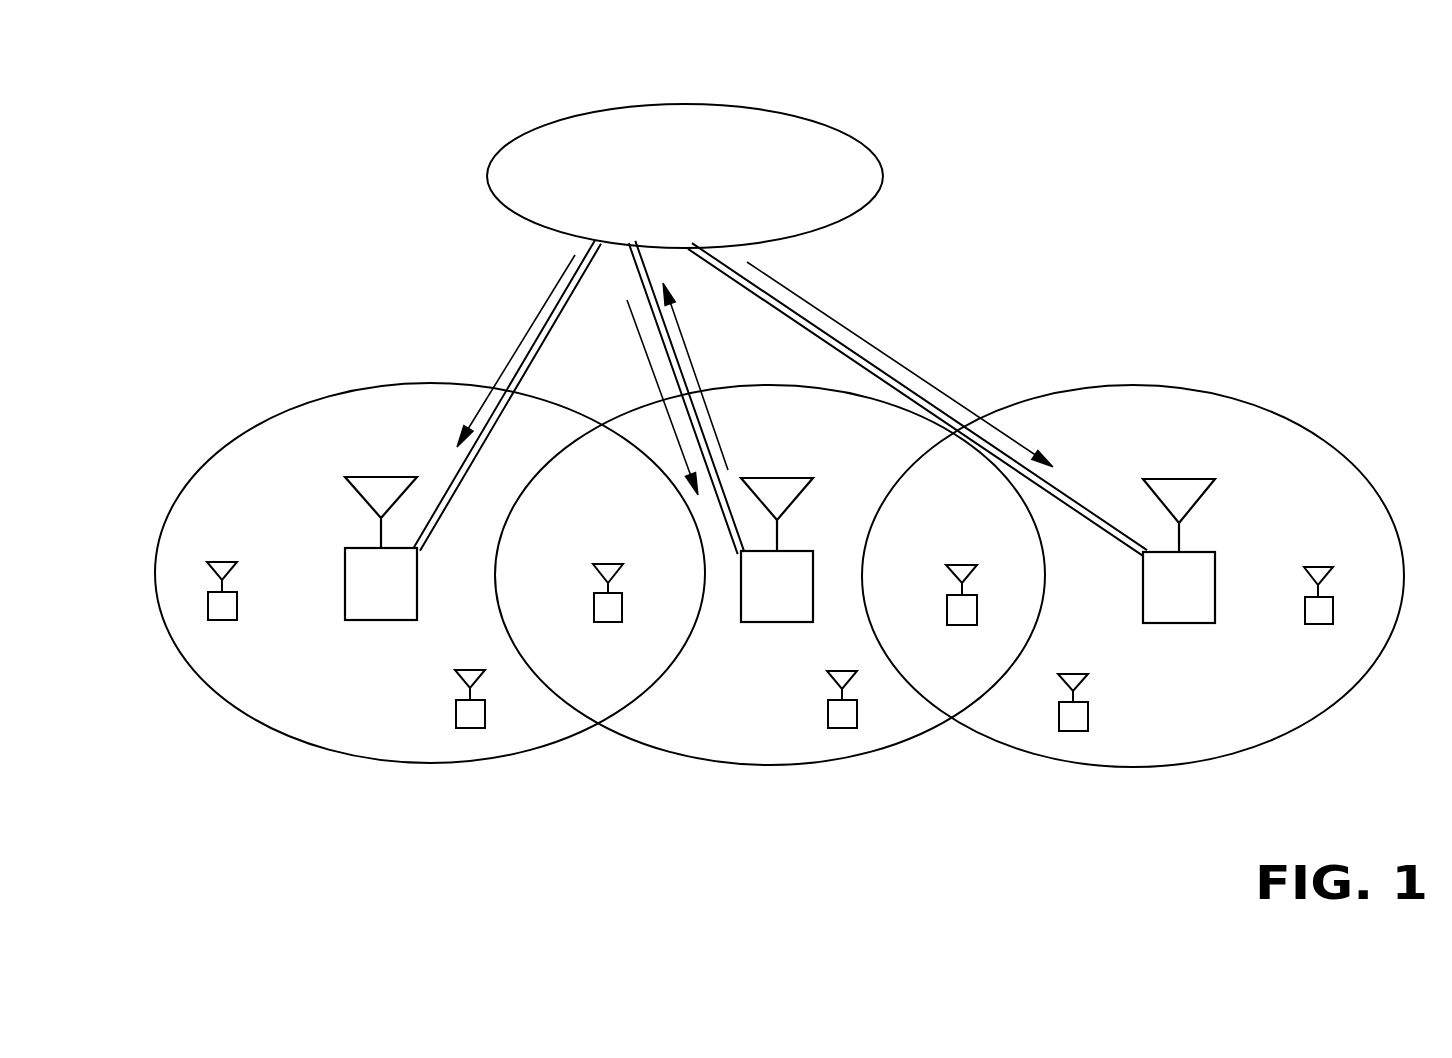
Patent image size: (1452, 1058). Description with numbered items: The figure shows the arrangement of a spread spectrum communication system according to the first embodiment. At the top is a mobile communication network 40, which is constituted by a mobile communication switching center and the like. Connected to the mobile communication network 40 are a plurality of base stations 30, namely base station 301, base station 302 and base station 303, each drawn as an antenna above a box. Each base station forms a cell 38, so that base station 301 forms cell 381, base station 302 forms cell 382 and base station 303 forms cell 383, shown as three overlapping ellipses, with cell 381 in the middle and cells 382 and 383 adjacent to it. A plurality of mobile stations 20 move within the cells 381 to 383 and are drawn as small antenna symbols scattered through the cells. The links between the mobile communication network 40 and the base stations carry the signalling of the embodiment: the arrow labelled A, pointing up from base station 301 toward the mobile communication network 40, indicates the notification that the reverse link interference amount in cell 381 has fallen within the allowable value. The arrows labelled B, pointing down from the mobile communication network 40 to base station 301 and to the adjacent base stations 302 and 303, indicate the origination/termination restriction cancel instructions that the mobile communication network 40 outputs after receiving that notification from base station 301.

The mobile station 20 is at (220, 622).
The base station 30 is at (773, 613).
The base station 301 is at (760, 623).
The base station 302 is at (345, 598).
The base station 303 is at (1172, 625).
The cell 38 is at (779, 611).
The cell 381 is at (745, 765).
The cell 382 is at (347, 757).
The cell 383 is at (1053, 760).
The mobile communication network 40 is at (872, 152).
The notification A is at (685, 340).
The notification B is at (537, 320).